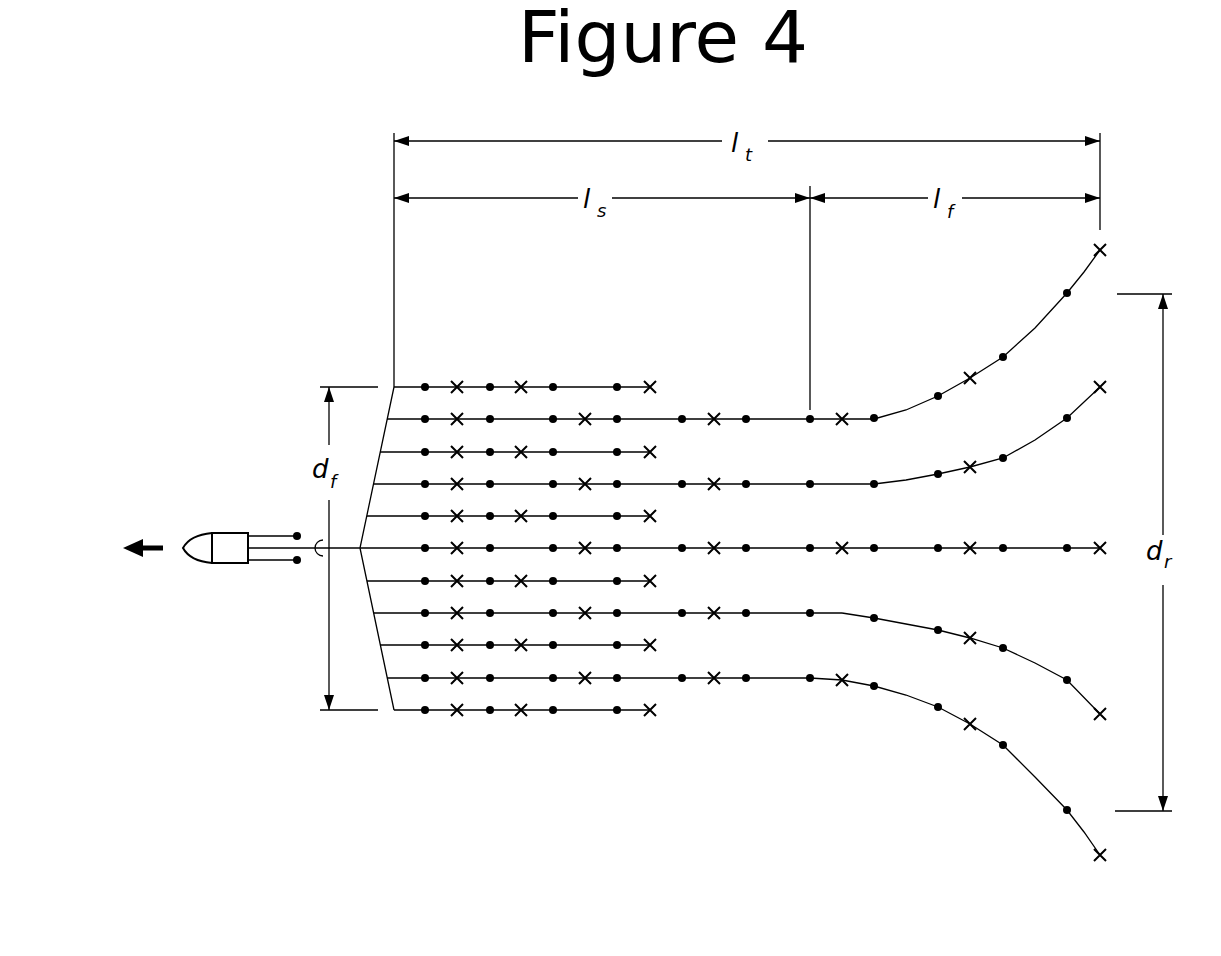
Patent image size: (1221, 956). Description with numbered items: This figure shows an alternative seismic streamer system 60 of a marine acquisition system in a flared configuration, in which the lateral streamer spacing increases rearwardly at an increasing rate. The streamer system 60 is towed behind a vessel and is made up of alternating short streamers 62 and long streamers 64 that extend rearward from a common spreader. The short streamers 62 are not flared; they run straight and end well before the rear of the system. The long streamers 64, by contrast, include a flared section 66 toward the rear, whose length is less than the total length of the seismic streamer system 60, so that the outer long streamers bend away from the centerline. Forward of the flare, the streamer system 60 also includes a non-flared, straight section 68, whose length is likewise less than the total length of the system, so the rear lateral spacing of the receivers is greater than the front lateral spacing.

The seismic streamer system 60 is at (733, 552).
The short streamers 62 is at (505, 448).
The long streamers 64 is at (733, 552).
The flared section 66 is at (954, 309).
The non-flared/straight section 68 is at (668, 308).